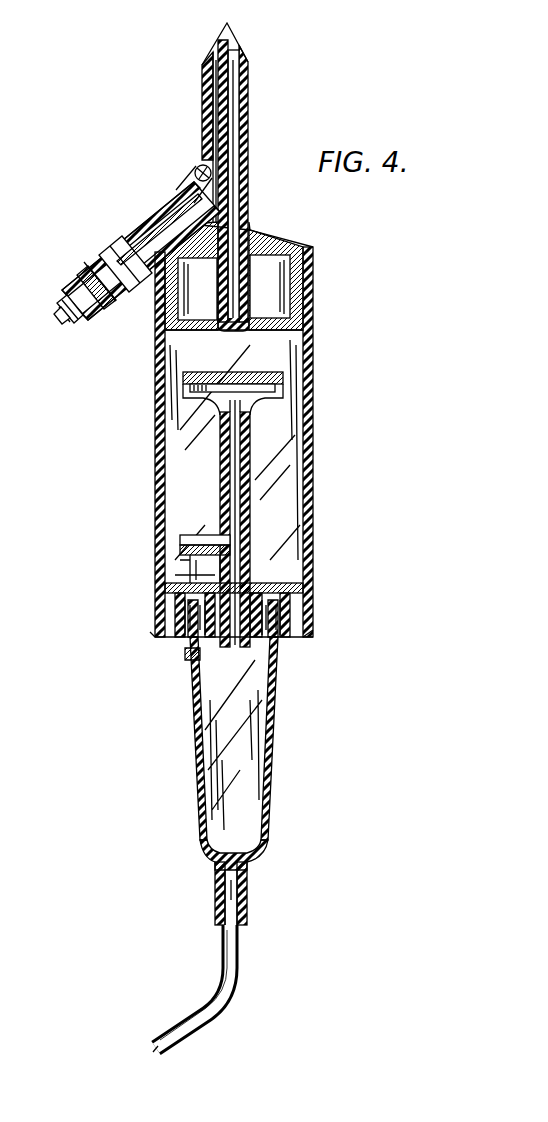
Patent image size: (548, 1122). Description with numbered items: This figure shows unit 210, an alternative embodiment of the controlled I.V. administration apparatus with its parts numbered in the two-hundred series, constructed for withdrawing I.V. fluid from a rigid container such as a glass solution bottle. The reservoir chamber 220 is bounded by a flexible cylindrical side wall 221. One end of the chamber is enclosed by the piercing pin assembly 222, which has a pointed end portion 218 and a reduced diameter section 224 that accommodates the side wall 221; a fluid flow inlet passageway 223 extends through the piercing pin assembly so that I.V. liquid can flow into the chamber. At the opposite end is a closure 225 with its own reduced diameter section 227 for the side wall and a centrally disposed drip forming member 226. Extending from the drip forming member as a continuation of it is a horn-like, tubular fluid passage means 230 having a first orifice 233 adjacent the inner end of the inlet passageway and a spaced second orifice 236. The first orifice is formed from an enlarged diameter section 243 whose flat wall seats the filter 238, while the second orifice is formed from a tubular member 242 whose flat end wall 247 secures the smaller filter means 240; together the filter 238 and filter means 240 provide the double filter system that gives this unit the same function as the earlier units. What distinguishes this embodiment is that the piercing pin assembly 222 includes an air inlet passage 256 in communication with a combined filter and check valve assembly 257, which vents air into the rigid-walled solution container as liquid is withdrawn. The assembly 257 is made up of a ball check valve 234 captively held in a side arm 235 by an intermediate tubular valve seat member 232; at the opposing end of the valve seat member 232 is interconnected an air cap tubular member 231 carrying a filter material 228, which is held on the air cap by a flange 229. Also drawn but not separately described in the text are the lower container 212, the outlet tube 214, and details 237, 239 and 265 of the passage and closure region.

The unit 210 is at (152, 446).
The reservoir 212 is at (270, 758).
The dispensing tube 214 is at (212, 1016).
The pointed end portion 218 is at (231, 30).
The reservoir chamber 220 is at (313, 494).
The flexible cylindrical side wall 221 is at (313, 548).
The piercing pin assembly 222 is at (248, 107).
The fluid flow inlet passageway 223 is at (236, 78).
The reduced diameter section 224 is at (308, 291).
The closure 225 is at (312, 638).
The drip forming member 226 is at (188, 656).
The reduced diameter section 227 is at (300, 611).
The filter material 228 is at (73, 303).
The flange 229 is at (86, 326).
The fluid passage means 230 is at (262, 518).
The air cap tubular member 231 is at (98, 250).
The valve seat member 232 is at (152, 203).
The first orifice 233 is at (284, 397).
The ball check valve 234 is at (201, 163).
The side arm 235 is at (196, 150).
The second orifice 236 is at (224, 560).
The spring seat 237 is at (222, 526).
The filter 238 is at (286, 374).
The piston stem 239 is at (243, 487).
The filter means 240 is at (182, 546).
The tubular member 242 is at (210, 577).
The enlarged diameter section 243 is at (286, 386).
The flat end wall 247 is at (215, 540).
The air inlet passage 256 is at (215, 53).
The combined filter and check valve assembly 257 is at (130, 217).
The seal ring 265 is at (196, 624).